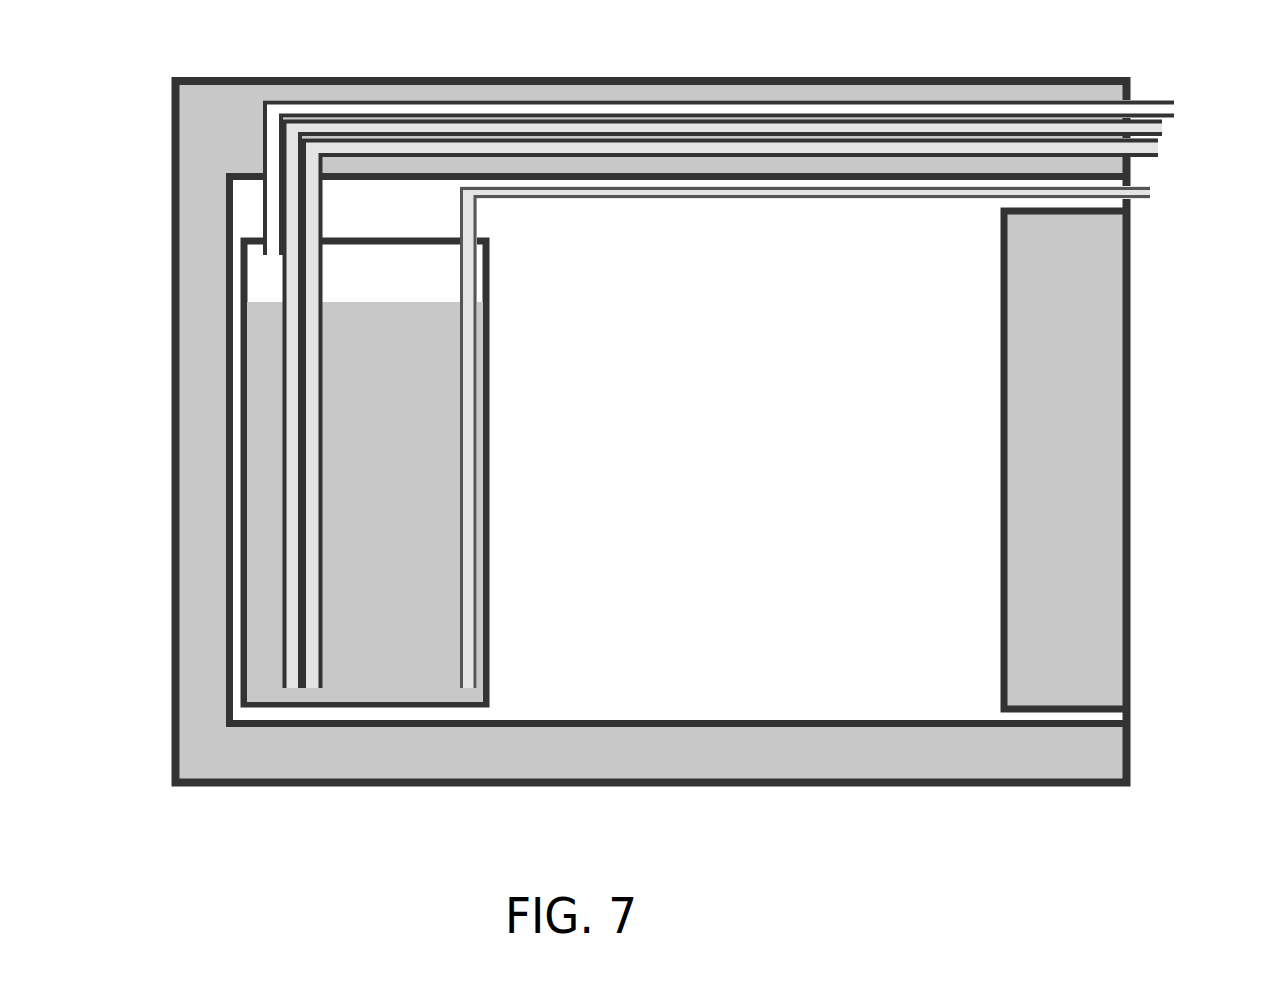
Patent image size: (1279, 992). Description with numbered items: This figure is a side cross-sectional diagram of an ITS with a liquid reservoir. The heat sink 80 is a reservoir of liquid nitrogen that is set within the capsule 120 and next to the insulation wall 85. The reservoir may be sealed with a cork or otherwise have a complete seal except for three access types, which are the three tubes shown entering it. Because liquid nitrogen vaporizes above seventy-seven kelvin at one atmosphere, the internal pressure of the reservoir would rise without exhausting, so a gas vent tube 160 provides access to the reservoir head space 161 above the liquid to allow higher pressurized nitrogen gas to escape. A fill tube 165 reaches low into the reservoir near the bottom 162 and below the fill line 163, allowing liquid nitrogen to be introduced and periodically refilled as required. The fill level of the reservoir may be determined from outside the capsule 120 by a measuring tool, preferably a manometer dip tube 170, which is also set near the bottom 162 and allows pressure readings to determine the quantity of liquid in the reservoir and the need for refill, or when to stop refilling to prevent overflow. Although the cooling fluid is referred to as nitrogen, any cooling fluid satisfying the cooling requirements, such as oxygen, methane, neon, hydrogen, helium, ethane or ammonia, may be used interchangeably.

The capsule 120 is at (379, 87).
The insulation wall 85 is at (1120, 495).
The heat sink 80 is at (490, 600).
The fill line 163 is at (357, 308).
The gas vent tube 160 is at (270, 112).
The fill tube 165 is at (578, 147).
The manometer dip tube 170 is at (470, 425).
The reservoir head space 161 is at (257, 280).
The bottom 162 is at (277, 675).